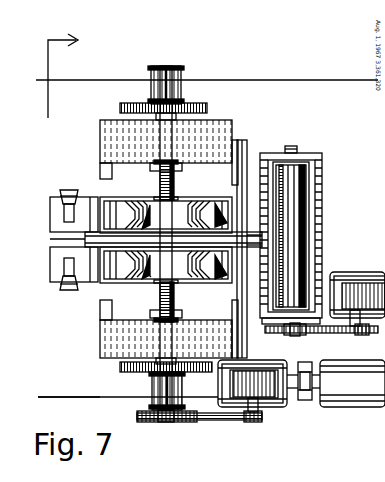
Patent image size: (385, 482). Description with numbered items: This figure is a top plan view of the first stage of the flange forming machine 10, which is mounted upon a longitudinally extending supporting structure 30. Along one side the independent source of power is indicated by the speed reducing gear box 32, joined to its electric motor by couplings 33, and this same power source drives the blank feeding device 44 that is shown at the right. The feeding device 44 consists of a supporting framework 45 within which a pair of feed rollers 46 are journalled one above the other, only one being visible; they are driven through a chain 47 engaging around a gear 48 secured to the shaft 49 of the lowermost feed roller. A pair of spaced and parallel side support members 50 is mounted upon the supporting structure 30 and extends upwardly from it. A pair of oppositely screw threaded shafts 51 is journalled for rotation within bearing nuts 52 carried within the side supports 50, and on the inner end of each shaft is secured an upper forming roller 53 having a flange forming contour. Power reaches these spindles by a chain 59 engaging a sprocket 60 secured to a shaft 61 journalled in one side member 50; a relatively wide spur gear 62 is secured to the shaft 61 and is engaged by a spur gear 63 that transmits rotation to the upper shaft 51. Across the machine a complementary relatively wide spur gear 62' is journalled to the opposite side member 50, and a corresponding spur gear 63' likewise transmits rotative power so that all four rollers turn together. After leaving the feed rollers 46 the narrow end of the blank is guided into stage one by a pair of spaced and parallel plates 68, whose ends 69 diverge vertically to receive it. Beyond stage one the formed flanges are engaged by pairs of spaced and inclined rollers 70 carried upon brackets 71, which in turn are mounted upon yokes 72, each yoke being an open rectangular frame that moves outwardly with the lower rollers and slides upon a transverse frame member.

The apparatus 10 is at (63, 66).
The supporting structure 30 is at (69, 386).
The speed reducing gear box 32 is at (360, 275).
The couplings 33 is at (304, 363).
The blank feeding device 44 is at (320, 224).
The supporting framework 45 is at (318, 194).
The feed rollers 46 is at (302, 254).
The chain 47 is at (351, 328).
The gear 48 is at (268, 328).
The shaft of the lowermost feed roller 49 is at (300, 142).
The side support members 50 is at (111, 134).
The oppositely screw threaded shafts 51 is at (150, 99).
The bearing nuts 52 is at (150, 165).
The upper forming roller 53 is at (142, 212).
The chain 59 is at (222, 422).
The sprocket 60 is at (136, 414).
The shaft 61 is at (168, 422).
The spur gear 62 is at (150, 391).
The spur gear 62' is at (184, 85).
The spur gear 63 is at (147, 376).
The spur gear 63' is at (188, 107).
The spaced and parallel plates 68 is at (58, 246).
The ends of the plates 69 is at (262, 228).
The inclined rollers 70 is at (90, 214).
The brackets 71 is at (64, 187).
The yokes 72 is at (50, 219).